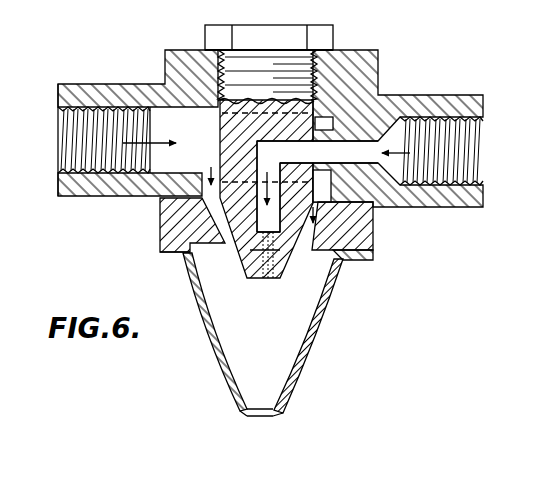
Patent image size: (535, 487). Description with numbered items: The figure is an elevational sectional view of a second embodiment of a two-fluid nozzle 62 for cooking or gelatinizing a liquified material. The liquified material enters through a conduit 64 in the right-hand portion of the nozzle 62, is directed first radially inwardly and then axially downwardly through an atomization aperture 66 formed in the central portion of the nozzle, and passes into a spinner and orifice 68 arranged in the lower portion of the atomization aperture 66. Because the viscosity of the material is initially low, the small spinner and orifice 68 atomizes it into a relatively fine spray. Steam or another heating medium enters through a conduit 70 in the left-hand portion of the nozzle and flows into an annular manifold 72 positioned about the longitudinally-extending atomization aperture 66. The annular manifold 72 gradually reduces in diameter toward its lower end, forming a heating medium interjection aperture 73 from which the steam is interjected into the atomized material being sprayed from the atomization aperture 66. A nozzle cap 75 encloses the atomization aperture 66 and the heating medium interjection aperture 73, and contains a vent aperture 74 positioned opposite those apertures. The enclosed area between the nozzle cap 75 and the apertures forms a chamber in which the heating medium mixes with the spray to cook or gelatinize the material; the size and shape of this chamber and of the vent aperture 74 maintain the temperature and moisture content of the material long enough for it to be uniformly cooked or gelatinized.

The two-fluid nozzle 62 is at (403, 58).
The conduit 64 is at (433, 133).
The atomization aperture 66 is at (271, 222).
The spinner and orifice 68 is at (255, 248).
The conduit 70 is at (100, 118).
The annular manifold 72 is at (207, 218).
The heating medium interjection aperture 73 is at (227, 225).
The vent aperture 74 is at (258, 418).
The nozzle cap 75 is at (223, 382).